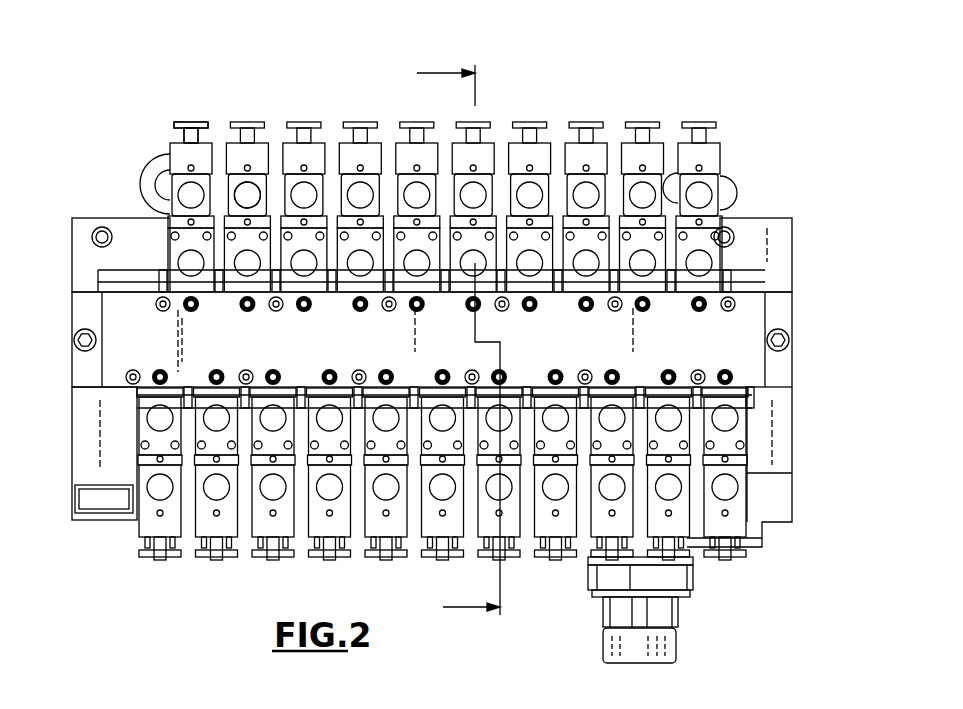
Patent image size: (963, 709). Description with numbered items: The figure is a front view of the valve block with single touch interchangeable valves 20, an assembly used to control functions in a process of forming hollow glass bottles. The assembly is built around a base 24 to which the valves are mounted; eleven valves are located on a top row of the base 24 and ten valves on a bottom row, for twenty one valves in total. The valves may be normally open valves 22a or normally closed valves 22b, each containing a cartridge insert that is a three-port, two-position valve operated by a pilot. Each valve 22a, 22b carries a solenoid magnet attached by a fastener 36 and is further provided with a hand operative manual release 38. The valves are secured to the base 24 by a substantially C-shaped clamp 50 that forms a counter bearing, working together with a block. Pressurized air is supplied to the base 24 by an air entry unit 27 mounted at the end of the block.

The valve block with single touch interchangeable valves 20 is at (652, 66).
The normally open valve 22a is at (185, 153).
The normally closed valve 22b is at (152, 520).
The base 24 is at (150, 327).
The air entry unit 27 is at (757, 237).
The fastener 36 is at (249, 195).
The hand operative manual release 38 is at (191, 122).
The clamp 50 is at (203, 282).